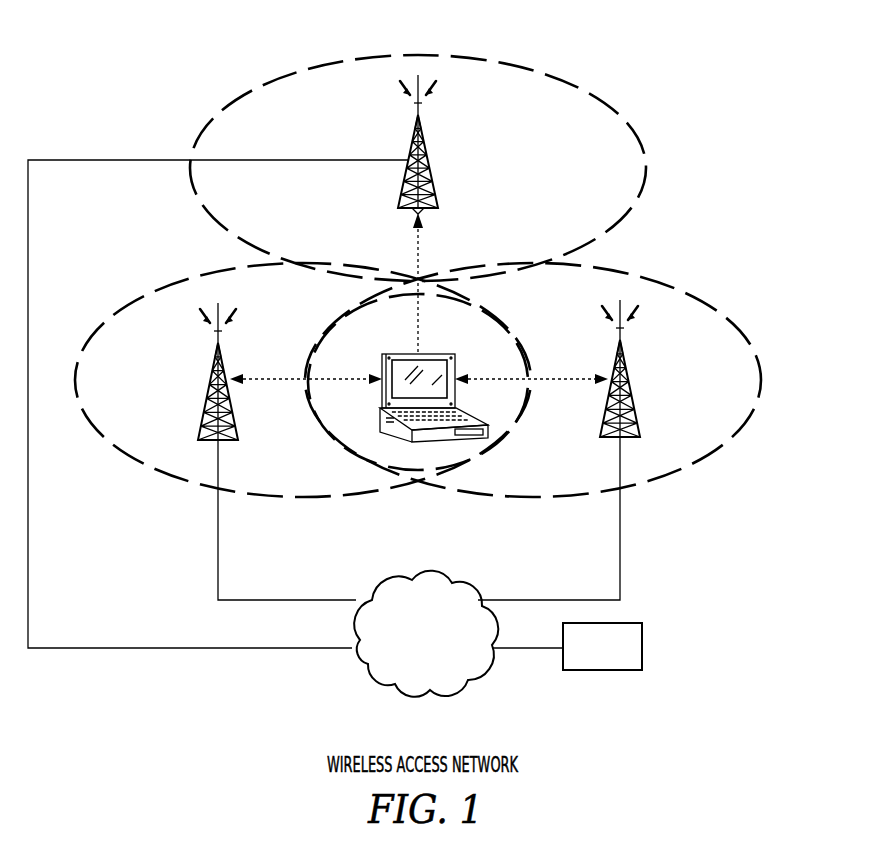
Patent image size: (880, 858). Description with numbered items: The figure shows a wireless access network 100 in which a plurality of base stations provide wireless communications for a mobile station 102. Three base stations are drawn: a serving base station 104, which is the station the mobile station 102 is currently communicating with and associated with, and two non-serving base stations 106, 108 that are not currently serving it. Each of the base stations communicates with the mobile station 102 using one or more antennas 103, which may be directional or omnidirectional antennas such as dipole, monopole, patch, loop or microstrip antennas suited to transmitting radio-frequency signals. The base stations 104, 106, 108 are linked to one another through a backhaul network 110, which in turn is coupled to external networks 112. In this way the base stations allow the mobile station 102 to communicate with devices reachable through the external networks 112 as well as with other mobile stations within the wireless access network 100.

The wireless access network 100 is at (700, 58).
The mobile station 102 is at (386, 354).
The antennas 103 is at (415, 103).
The serving base station 104 is at (622, 356).
The non-serving base station 106 is at (421, 125).
The non-serving base station 108 is at (223, 357).
The backhaul network 110 is at (469, 586).
The external networks 112 is at (630, 623).